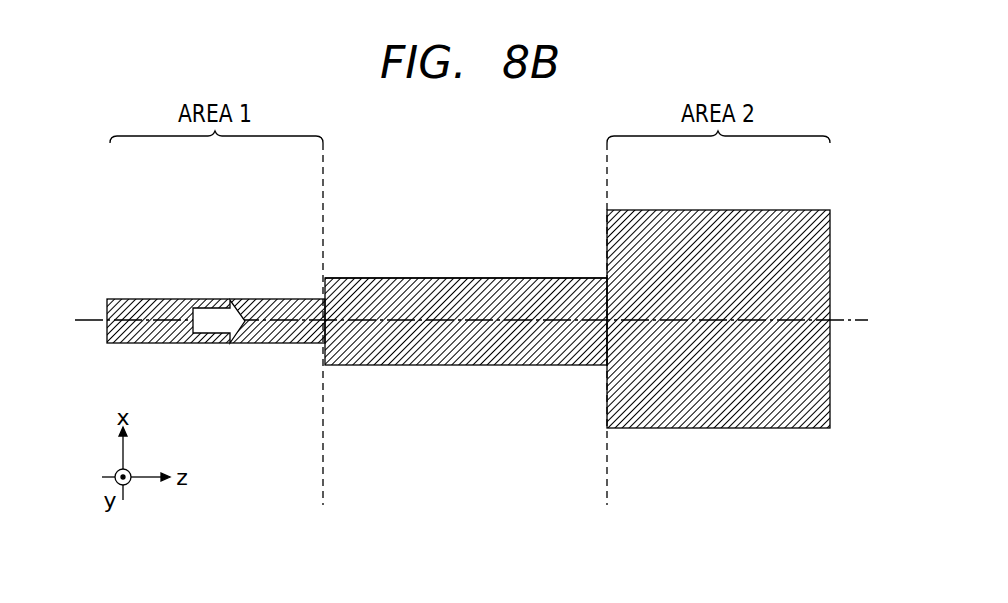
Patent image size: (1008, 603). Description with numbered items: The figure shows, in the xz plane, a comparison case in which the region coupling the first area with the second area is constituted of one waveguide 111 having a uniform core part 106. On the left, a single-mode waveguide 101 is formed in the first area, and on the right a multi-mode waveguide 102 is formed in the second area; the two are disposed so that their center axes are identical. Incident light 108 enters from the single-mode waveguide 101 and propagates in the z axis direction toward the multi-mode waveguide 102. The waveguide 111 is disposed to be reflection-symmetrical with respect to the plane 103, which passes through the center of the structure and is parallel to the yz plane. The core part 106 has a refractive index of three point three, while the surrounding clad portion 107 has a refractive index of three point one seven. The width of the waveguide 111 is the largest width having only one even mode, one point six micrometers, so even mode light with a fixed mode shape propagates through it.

The single-mode waveguide 101 is at (172, 298).
The multi-mode waveguide 102 is at (738, 210).
The plane 103 is at (843, 322).
The core part 106 is at (458, 365).
The clad portion 107 is at (385, 438).
The incident light 108 is at (217, 327).
The waveguide 111 is at (458, 278).